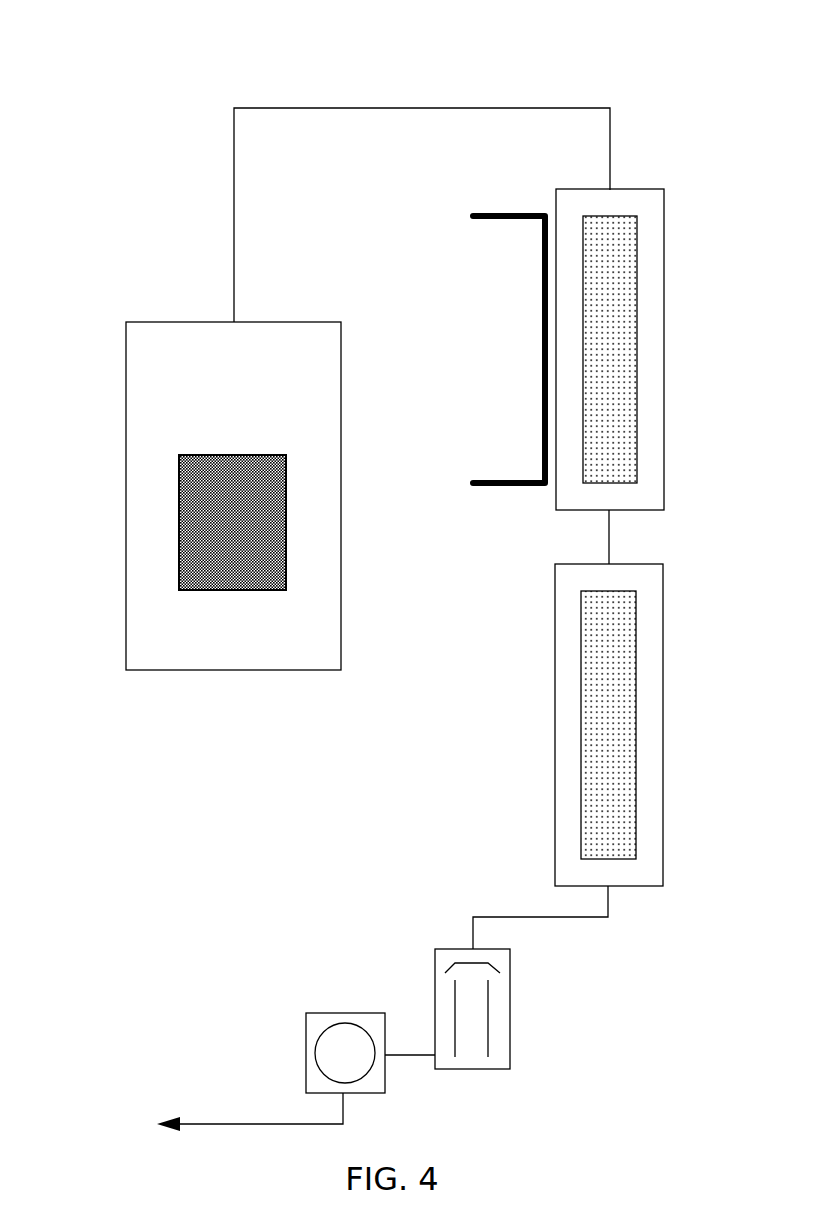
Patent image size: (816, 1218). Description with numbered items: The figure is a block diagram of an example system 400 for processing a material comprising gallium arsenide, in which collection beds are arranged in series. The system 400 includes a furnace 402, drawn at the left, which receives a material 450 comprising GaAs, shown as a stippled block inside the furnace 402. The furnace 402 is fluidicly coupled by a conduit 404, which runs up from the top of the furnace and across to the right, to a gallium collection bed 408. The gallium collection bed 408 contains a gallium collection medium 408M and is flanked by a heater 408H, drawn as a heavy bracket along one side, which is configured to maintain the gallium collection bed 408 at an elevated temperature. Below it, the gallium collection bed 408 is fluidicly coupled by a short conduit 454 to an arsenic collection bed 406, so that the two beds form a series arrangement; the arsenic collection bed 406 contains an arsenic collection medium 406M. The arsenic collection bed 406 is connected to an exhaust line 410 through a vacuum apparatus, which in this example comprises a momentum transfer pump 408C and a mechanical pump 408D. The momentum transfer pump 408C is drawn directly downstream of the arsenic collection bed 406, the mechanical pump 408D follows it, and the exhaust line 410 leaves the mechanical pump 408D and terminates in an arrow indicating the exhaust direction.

The system 400 is at (622, 82).
The furnace 402 is at (191, 347).
The conduit 404 is at (396, 108).
The arsenic collection bed 406 is at (646, 576).
The arsenic collection medium 406M is at (602, 730).
The gallium collection bed 408 is at (633, 197).
The gallium collection medium 408M is at (620, 268).
The heater 408H is at (542, 323).
The momentum transfer pump 408C is at (445, 938).
The mechanical pump 408D is at (317, 1020).
The exhaust line 410 is at (197, 1122).
The material 450 is at (195, 500).
The conduit 454 is at (608, 537).